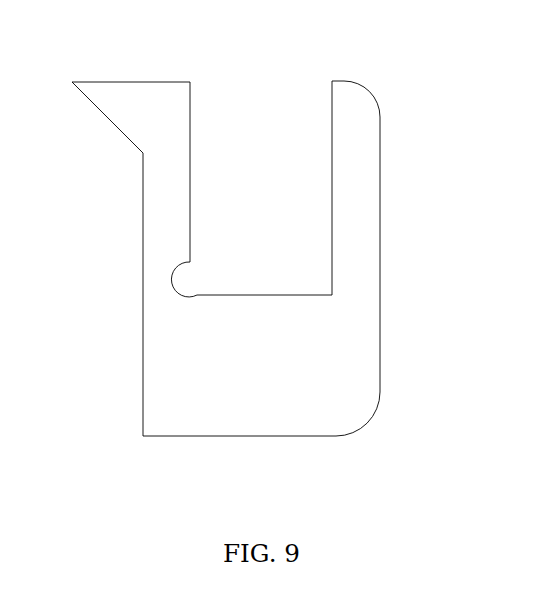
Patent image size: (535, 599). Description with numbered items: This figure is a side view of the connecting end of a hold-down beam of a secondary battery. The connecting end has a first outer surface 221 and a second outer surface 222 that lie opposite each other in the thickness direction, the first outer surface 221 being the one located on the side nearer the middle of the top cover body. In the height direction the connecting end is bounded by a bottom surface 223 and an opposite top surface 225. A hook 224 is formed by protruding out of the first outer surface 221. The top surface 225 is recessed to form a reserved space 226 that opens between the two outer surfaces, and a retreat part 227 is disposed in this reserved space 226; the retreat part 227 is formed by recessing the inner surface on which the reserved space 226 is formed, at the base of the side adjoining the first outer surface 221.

The first outer surface 221 is at (143, 293).
The second outer surface 222 is at (380, 269).
The bottom surface 223 is at (157, 437).
The hook 224 is at (118, 103).
The top surface 225 is at (129, 80).
The reserved space 226 is at (277, 108).
The retreat part 227 is at (187, 281).